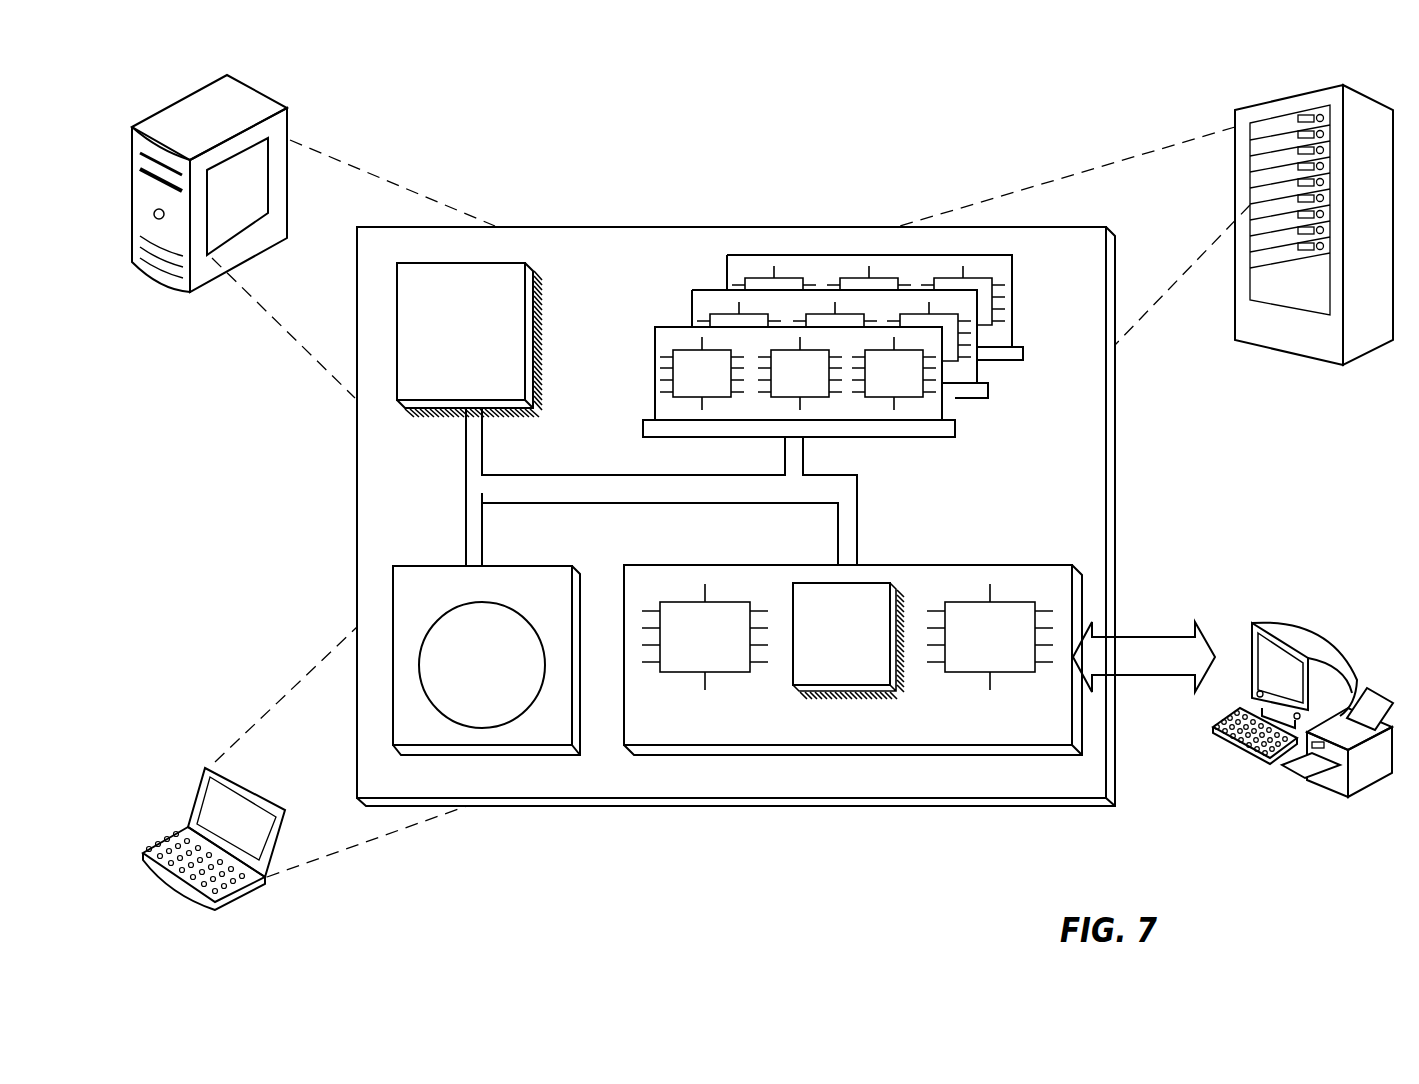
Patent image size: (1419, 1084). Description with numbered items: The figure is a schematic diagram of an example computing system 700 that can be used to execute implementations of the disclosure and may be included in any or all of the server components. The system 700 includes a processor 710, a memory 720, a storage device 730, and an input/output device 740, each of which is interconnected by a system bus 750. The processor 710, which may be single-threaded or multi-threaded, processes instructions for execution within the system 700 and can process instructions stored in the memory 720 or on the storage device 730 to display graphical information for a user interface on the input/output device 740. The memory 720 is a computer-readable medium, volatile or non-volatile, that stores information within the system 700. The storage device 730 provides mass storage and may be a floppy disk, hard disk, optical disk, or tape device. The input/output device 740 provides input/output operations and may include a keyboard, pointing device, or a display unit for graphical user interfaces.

The computing system 700 is at (553, 140).
The processor 710 is at (518, 396).
The memory 720 is at (1024, 406).
The storage device 730 is at (563, 737).
The input/output device 740 is at (1250, 626).
The system bus 750 is at (655, 495).